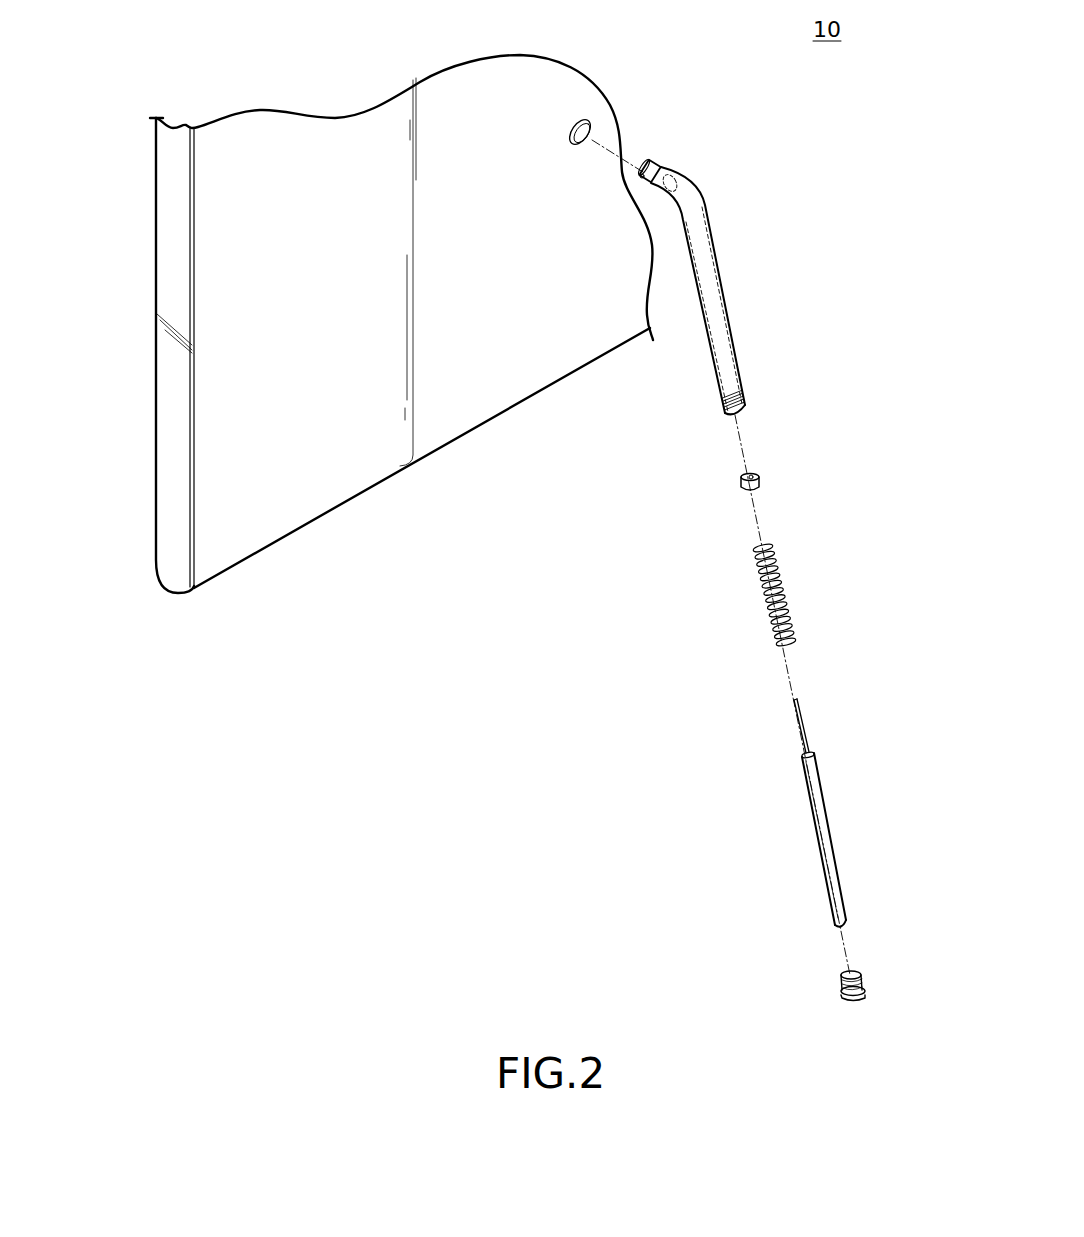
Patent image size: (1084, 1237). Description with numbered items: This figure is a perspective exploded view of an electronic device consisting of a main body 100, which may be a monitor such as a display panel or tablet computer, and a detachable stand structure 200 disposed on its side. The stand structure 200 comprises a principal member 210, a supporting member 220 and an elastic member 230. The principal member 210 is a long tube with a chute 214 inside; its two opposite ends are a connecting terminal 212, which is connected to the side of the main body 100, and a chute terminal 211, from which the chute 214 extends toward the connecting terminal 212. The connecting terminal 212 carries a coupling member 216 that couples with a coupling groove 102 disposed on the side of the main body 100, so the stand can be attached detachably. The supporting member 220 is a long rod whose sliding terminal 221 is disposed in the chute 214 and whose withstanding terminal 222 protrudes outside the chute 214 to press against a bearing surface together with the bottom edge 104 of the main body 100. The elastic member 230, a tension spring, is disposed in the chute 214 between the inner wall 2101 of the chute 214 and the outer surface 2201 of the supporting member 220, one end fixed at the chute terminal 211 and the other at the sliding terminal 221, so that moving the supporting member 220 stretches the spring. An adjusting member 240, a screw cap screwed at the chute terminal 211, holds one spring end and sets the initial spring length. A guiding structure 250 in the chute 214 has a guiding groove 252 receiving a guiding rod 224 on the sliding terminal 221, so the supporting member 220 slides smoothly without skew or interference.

The main body 100 is at (322, 533).
The coupling groove 102 is at (594, 128).
The bottom edge 104 is at (176, 595).
The stand structure 200 is at (782, 352).
The principal member 210 is at (733, 275).
The inner wall 2101 is at (712, 312).
The chute terminal 211 is at (748, 400).
The connecting terminal 212 is at (690, 178).
The chute 214 is at (720, 291).
The coupling member 216 is at (655, 160).
The supporting member 220 is at (822, 827).
The outer surface 2201 is at (816, 838).
The sliding terminal 221 is at (802, 755).
The withstanding terminal 222 is at (846, 926).
The guiding rod 224 is at (805, 715).
The elastic member 230 is at (784, 592).
The adjusting member 240 is at (860, 993).
The guiding structure 250 is at (785, 465).
The guiding groove 252 is at (753, 476).